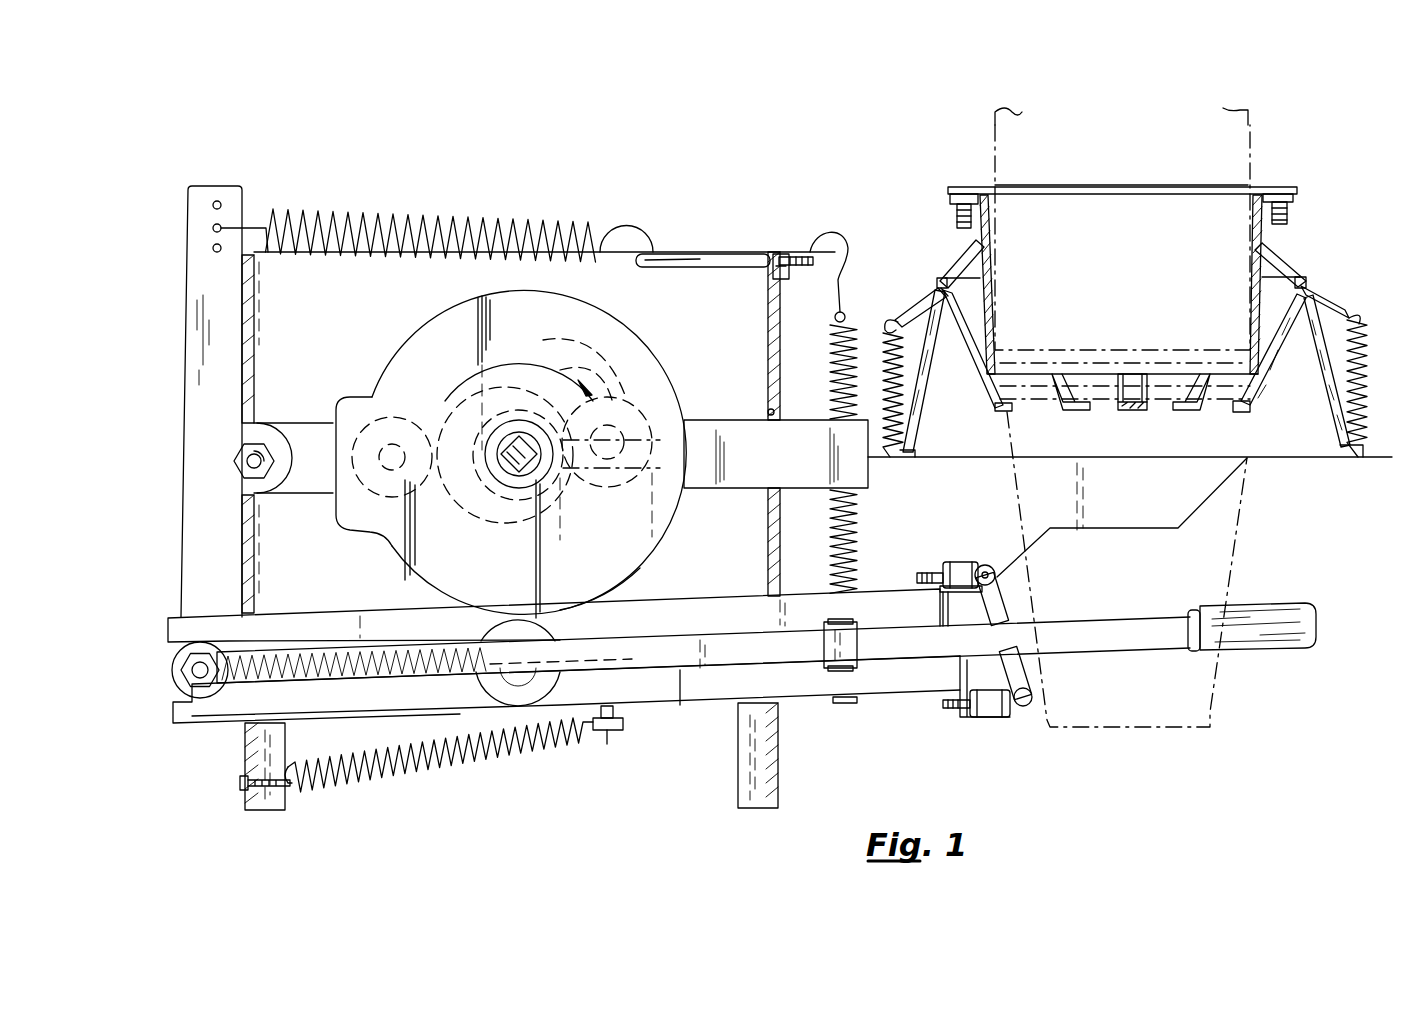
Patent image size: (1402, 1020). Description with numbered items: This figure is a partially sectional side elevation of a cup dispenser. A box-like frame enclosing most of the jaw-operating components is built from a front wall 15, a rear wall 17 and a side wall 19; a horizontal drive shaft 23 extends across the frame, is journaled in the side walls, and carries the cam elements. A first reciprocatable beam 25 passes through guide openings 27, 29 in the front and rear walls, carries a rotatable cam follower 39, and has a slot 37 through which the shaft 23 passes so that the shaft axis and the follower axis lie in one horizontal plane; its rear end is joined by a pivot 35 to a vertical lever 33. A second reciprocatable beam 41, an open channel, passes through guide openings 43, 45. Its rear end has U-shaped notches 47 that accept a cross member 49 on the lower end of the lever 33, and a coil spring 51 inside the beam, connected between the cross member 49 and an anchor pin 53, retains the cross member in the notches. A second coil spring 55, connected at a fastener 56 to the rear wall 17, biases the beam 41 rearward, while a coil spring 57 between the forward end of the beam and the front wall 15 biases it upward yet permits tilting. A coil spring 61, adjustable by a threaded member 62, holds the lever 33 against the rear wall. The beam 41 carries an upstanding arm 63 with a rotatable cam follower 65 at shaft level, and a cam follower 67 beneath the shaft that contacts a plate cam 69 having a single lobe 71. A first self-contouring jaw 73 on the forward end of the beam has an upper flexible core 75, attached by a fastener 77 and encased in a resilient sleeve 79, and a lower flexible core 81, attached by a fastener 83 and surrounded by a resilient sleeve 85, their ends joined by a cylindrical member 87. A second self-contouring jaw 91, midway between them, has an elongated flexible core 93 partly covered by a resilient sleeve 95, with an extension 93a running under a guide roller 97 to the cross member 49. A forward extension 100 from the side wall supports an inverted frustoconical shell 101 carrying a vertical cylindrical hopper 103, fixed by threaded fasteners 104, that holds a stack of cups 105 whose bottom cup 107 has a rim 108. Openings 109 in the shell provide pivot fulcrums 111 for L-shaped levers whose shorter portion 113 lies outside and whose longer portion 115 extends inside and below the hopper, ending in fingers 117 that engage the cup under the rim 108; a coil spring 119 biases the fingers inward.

The front wall 15 is at (781, 335).
The rear wall 17 is at (242, 368).
The side wall 19 is at (304, 296).
The horizontal drive shaft 23 is at (505, 472).
The first reciprocatable beam 25 is at (712, 420).
The guide opening 27 is at (768, 412).
The guide opening 29 is at (240, 498).
The vertical lever 33 is at (190, 390).
The pivot 35 is at (240, 463).
The slot 37 is at (445, 410).
The rotatable cam follower 39 is at (370, 396).
The second reciprocatable beam 41 is at (650, 703).
The guide opening 43 is at (780, 730).
The guide opening 45 is at (252, 612).
The axial U-shaped notches 47 is at (192, 723).
The cross member 49 is at (170, 672).
The coil spring 51 is at (315, 680).
The anchor pin 53 is at (575, 658).
The second coil spring 55 is at (490, 762).
The fastener 56 is at (607, 744).
The coil spring 57 is at (858, 510).
The coil spring 61 is at (422, 257).
The threaded member 62 is at (718, 258).
The upstanding arm 63 is at (662, 572).
The rotatable cam follower 65 is at (608, 490).
The rotatable cam follower 67 is at (475, 694).
The plate cam 69 is at (618, 592).
The lobe 71 is at (338, 508).
The first self-contouring jaw 73 is at (956, 716).
The flexible core 75 is at (988, 566).
The fastener 77 is at (922, 572).
The resilient sleeve 79 is at (961, 560).
The flexible core 81 is at (1022, 706).
The fastener 83 is at (940, 705).
The resilient sleeve 85 is at (985, 717).
The cylindrical member 87 is at (1033, 680).
The second self-contouring jaw 91 is at (1318, 641).
The elongated flexible core 93 is at (1137, 648).
The extension 93a is at (681, 706).
The resilient sleeve 95 is at (1248, 640).
The guide roller 97 is at (840, 672).
The forward extension 100 is at (966, 488).
The inverted frustoconical shell 101 is at (1335, 395).
The vertical cylindrical hopper 103 is at (1264, 243).
The threaded fasteners 104 is at (957, 222).
The stack of cups 105 is at (1252, 174).
The bottom cup 107 is at (1130, 589).
The rim 108 is at (1212, 404).
The openings 109 is at (1306, 282).
The pivot fulcrums 111 is at (1310, 292).
The shorter portion 113 is at (1342, 310).
The longer portion 115 is at (1274, 378).
The fingers 117 is at (1244, 412).
The coil spring 119 is at (1342, 420).